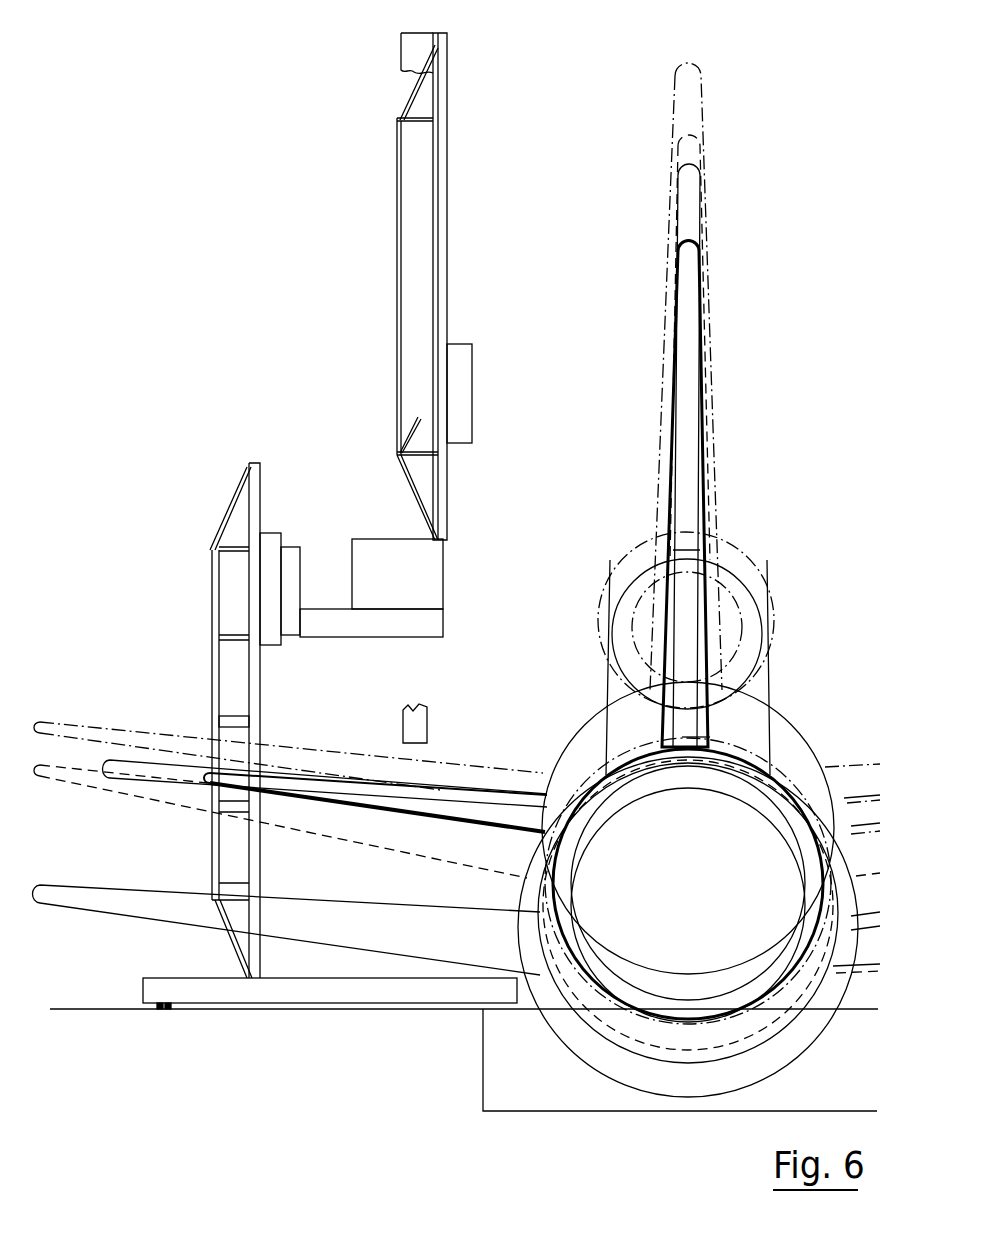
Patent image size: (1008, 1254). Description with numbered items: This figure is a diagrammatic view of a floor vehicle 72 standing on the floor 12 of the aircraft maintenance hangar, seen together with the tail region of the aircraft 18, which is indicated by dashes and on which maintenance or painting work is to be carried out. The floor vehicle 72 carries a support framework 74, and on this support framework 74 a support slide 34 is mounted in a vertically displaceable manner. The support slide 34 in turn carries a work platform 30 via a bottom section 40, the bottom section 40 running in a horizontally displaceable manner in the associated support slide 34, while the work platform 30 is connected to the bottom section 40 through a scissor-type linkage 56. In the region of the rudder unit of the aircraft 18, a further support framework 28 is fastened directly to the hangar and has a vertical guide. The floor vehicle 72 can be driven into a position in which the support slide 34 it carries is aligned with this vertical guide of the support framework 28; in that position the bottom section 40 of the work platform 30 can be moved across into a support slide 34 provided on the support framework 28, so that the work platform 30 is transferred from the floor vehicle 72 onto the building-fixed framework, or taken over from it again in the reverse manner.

The floor 12 is at (92, 1067).
The aircraft 18 is at (795, 407).
The support framework 28 is at (432, 259).
The work platform 30 is at (490, 577).
The support slide 34 is at (272, 572).
The bottom section 40 is at (298, 695).
The scissor-type linkage 56 is at (362, 695).
The floor vehicle 72 is at (320, 1037).
The support framework 74 is at (217, 627).